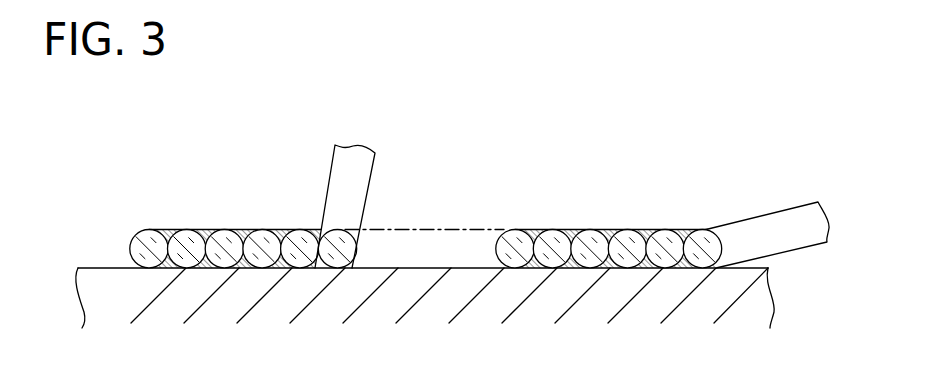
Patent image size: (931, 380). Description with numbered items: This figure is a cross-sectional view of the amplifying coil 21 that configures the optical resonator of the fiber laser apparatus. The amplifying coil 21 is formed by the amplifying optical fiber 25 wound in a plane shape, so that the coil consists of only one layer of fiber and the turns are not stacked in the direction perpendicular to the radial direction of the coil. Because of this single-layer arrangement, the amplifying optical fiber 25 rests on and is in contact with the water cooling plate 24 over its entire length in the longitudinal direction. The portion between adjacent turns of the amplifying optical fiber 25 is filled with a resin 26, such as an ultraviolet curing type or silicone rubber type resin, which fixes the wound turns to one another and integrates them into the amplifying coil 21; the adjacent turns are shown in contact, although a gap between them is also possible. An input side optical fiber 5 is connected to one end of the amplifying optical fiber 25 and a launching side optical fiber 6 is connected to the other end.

The amplifying coil 21 is at (447, 129).
The water cooling plate 24 is at (102, 283).
The amplifying optical fiber 25 is at (562, 250).
The resin 26 is at (612, 228).
The launching side optical fiber 6 is at (340, 182).
The input side optical fiber 5 is at (757, 230).